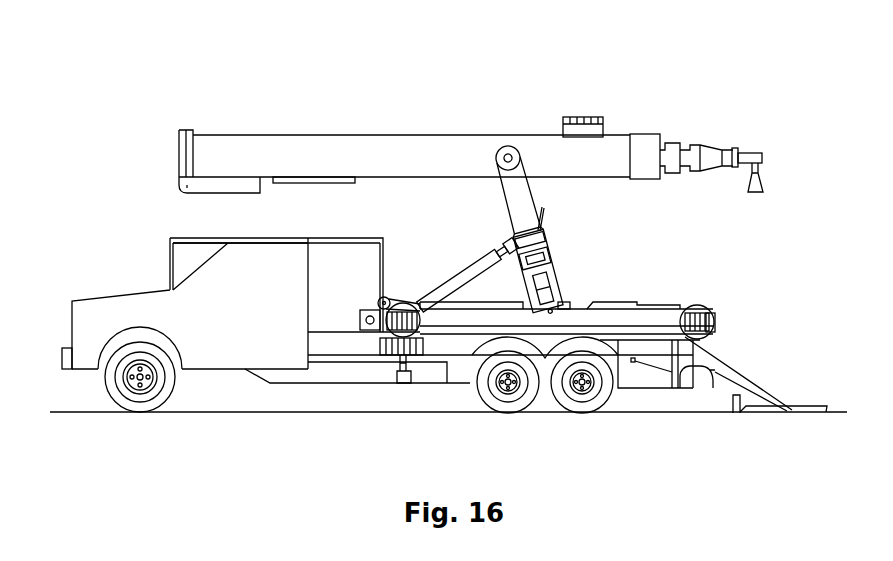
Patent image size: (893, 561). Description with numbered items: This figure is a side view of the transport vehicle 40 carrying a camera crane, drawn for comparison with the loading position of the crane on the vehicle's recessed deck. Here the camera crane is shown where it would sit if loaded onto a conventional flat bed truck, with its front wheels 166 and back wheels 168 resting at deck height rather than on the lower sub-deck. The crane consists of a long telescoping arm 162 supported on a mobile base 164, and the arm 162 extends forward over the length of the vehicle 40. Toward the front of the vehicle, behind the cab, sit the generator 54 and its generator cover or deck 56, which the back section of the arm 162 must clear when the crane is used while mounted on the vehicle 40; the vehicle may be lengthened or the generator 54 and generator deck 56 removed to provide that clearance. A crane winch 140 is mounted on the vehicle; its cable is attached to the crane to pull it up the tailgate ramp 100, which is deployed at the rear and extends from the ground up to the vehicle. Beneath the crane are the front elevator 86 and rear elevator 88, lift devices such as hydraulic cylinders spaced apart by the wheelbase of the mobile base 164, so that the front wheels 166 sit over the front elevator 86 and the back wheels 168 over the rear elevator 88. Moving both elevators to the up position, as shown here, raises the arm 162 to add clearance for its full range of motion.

The vehicle 40 is at (118, 64).
The telescoping arm 162 is at (396, 150).
The generator deck 56 is at (325, 237).
The generator 54 is at (340, 248).
The crane winch 140 is at (370, 310).
The mobile base 164 is at (579, 300).
The back wheels 168 is at (697, 305).
The front wheels 166 is at (392, 334).
The front elevator 86 is at (409, 377).
The rear elevator 88 is at (680, 388).
The tailgate ramp 100 is at (772, 386).